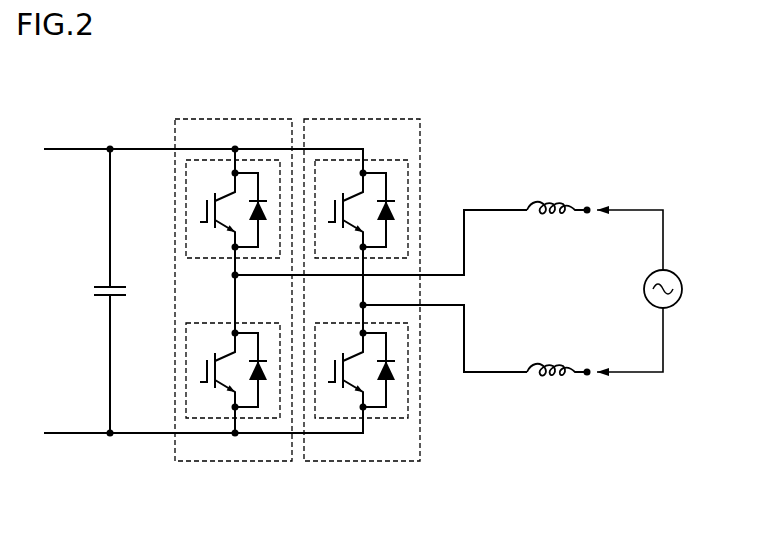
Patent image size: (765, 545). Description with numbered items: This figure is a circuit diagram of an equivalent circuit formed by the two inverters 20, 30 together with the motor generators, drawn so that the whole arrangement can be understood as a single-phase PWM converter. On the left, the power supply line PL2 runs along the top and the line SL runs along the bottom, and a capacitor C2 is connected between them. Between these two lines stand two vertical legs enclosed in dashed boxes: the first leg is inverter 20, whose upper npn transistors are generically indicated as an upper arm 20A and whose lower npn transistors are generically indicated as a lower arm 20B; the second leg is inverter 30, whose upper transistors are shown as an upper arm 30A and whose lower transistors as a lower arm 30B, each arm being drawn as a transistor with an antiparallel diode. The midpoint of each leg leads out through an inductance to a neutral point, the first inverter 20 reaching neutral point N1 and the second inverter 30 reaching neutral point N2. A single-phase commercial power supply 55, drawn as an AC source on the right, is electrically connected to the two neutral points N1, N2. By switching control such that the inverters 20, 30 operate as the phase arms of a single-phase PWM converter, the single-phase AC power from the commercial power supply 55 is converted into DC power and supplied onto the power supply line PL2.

The inverter 20 is at (205, 119).
The upper arm 20A is at (259, 159).
The lower arm 20B is at (212, 420).
The inverter 30 is at (333, 119).
The upper arm 30A is at (388, 159).
The lower arm 30B is at (380, 420).
The commercial power supply 55 is at (674, 306).
The power supply line PL2 is at (75, 147).
The ground (negative) line SL is at (77, 436).
The smoothing capacitor C2 is at (114, 286).
The neutral point N1 is at (588, 204).
The neutral point N2 is at (588, 366).